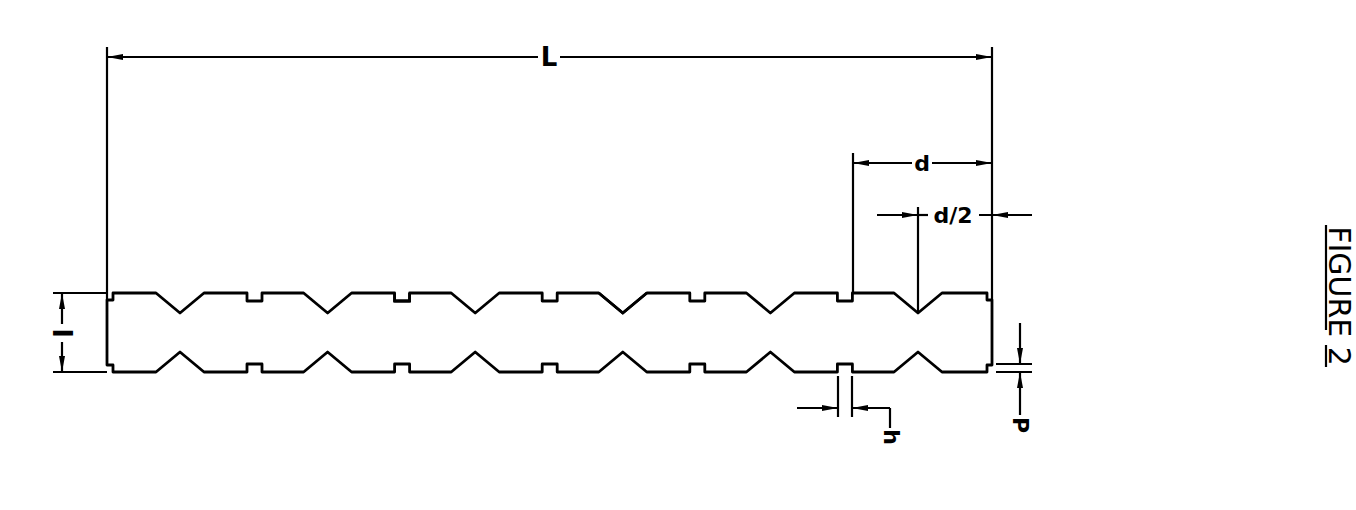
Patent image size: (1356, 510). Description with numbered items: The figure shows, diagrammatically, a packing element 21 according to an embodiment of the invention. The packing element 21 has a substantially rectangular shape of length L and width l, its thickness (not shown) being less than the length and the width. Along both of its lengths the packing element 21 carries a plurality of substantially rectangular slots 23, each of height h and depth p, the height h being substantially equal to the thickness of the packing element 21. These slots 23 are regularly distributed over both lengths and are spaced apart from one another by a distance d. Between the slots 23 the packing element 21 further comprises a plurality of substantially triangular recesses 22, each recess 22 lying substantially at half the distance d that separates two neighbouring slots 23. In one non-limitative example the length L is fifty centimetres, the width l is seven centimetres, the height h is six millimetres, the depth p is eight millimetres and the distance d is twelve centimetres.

The packing element 21 is at (745, 328).
The substantially triangular recess 22 is at (623, 312).
The substantially rectangular slot 23 is at (404, 293).